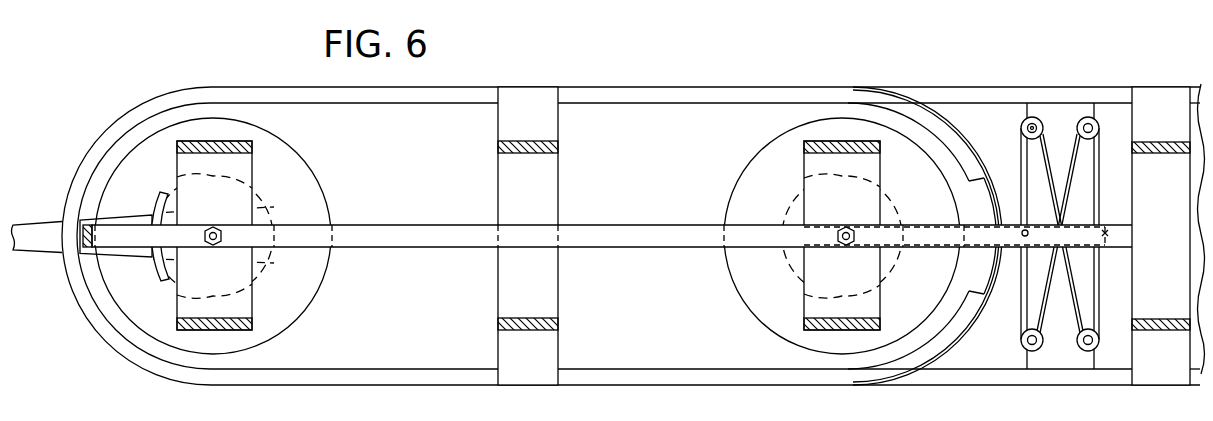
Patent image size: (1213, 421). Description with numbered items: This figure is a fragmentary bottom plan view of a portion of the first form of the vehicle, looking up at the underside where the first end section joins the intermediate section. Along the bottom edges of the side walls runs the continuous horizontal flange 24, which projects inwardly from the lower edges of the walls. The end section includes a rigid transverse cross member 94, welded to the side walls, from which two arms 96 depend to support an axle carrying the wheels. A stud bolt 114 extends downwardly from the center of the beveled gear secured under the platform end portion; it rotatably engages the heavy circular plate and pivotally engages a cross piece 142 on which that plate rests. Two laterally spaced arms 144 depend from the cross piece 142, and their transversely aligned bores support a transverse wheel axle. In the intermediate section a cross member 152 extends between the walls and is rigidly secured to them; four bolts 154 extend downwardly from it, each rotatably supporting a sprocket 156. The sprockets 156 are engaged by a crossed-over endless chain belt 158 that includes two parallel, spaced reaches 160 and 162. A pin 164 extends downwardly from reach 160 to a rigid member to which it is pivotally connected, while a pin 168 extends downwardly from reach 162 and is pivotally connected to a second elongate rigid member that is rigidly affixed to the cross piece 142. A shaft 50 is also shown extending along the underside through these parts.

The horizontal flange 24 is at (382, 97).
The shaft 50 is at (633, 232).
The transverse cross member 94 is at (560, 128).
The arms 96 is at (560, 147).
The stud bolt 114 is at (846, 229).
The cross piece 142 is at (872, 300).
The arms 144 is at (808, 141).
The cross member 152 is at (1062, 110).
The bolts 154 is at (1033, 117).
The sprocket 156 is at (1021, 125).
The crossed-over endless chain belt 158 is at (1078, 155).
The reach 160 is at (1026, 167).
The reach 162 is at (1097, 187).
The pin 164 is at (1023, 237).
The pin 168 is at (1108, 231).